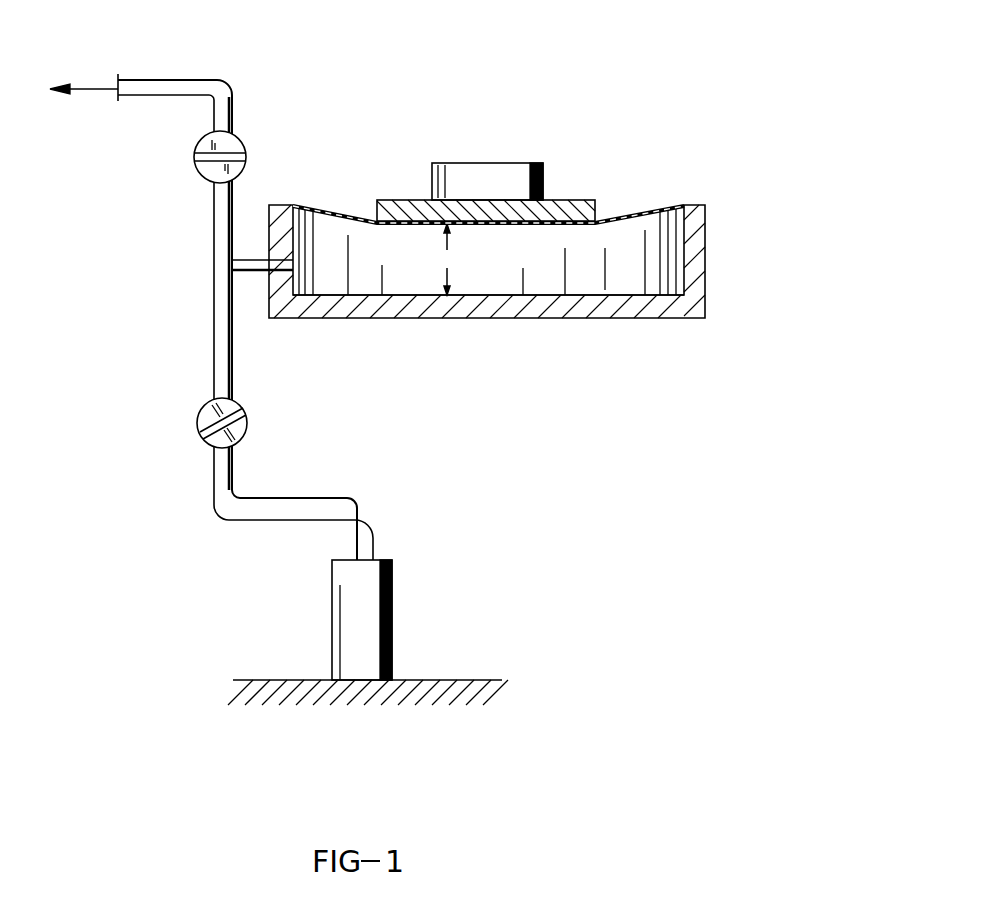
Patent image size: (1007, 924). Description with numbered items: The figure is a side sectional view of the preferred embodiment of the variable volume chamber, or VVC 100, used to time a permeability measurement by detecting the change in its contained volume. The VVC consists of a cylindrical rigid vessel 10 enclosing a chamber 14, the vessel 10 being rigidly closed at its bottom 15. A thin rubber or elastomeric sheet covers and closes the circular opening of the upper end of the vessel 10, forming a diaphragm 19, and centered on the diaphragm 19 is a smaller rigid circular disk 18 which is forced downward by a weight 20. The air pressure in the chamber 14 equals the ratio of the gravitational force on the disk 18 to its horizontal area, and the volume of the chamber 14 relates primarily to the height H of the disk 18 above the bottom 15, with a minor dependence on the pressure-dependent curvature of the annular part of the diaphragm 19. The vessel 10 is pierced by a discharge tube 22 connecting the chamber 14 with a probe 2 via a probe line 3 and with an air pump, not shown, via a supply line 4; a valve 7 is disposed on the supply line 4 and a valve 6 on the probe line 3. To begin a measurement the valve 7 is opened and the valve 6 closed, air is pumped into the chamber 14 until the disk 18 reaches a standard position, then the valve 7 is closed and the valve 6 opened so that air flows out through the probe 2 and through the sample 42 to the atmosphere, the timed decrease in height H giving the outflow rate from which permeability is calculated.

The probe 2 is at (367, 603).
The probe line 3 is at (222, 357).
The supply line 4 is at (215, 120).
The valve 6 is at (200, 428).
The valve 7 is at (240, 135).
The cylindrical rigid vessel 10 is at (707, 258).
The chamber 14 is at (634, 280).
The bottom 15 is at (565, 320).
The rigid circular disk 18 is at (578, 200).
The diaphragm 19 is at (660, 208).
The weight 20 is at (515, 163).
The discharge tube 22 is at (250, 264).
The sample 42 is at (468, 685).
The variable volume chamber (VVC) 100 is at (730, 283).